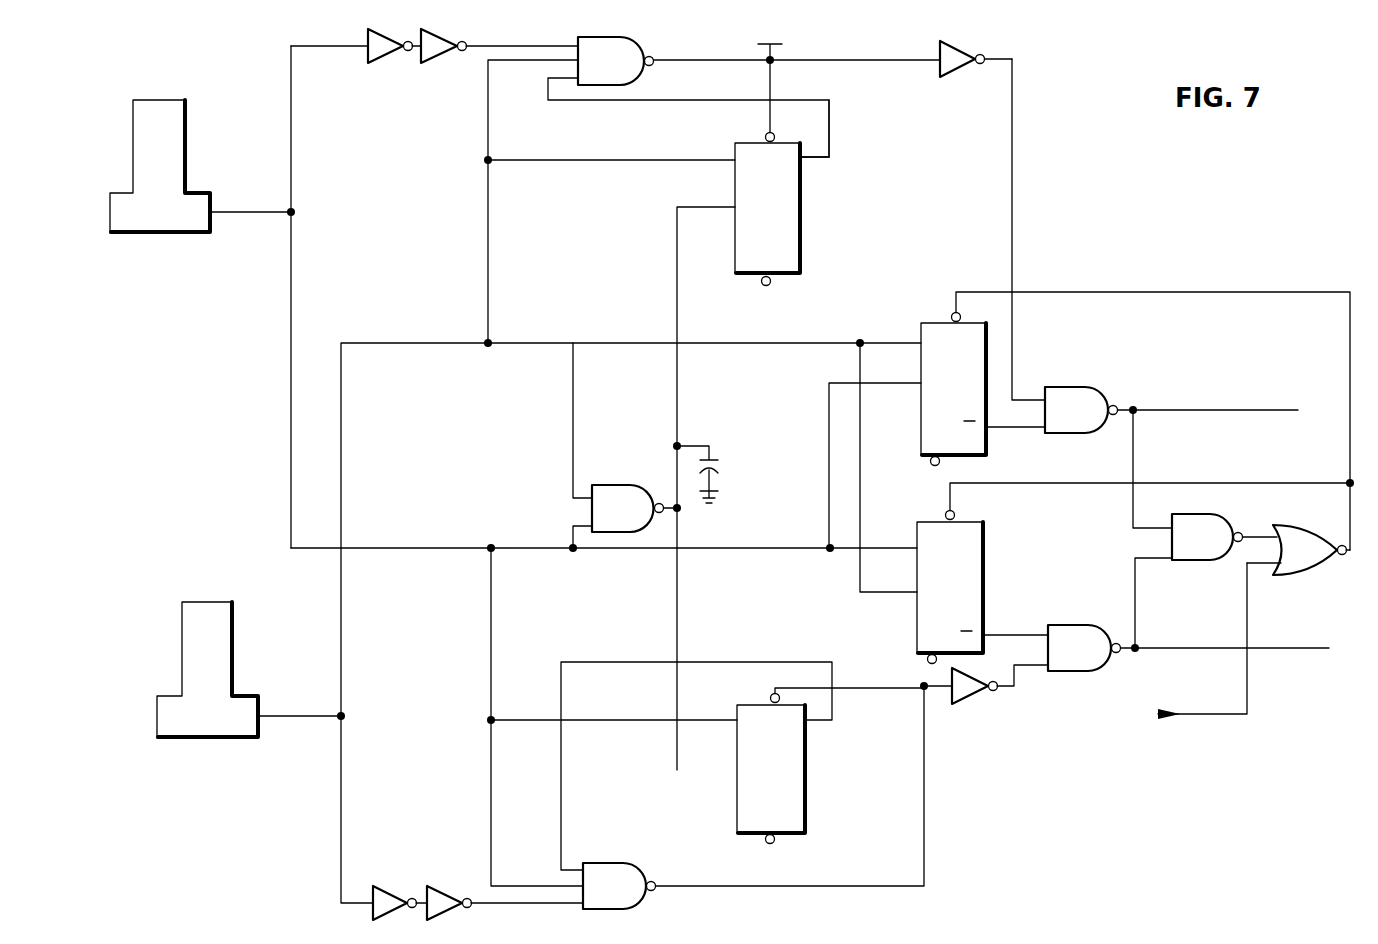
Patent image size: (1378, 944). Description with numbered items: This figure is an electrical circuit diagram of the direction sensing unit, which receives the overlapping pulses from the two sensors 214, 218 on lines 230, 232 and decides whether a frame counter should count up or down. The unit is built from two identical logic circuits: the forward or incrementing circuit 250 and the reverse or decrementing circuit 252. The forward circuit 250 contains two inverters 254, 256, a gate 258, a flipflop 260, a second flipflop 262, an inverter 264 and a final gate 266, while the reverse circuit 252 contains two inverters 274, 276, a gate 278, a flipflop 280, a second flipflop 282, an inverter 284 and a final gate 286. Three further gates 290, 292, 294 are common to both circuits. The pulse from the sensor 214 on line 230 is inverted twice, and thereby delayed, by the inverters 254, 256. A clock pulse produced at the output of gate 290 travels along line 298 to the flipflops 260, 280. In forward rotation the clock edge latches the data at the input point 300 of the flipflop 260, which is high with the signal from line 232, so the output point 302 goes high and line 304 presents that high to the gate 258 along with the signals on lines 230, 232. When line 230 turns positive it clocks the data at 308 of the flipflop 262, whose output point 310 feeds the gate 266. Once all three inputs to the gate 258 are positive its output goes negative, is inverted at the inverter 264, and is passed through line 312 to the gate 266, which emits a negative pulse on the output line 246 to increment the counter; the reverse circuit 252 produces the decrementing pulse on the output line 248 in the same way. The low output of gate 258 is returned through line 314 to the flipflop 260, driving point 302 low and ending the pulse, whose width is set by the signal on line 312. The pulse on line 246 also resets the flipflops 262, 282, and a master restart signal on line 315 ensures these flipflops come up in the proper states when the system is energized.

The sensor 214 is at (200, 166).
The sensor 218 is at (249, 670).
The line 230 is at (291, 496).
The line 232 is at (341, 437).
The output line 246 is at (1186, 410).
The output line 248 is at (1162, 647).
The forward or incrementing circuit 250 is at (284, 28).
The reverse or decrementing circuit 252 is at (322, 841).
The inverter 254 is at (380, 37).
The inverter 256 is at (446, 36).
The gate 258 is at (604, 45).
The flipflop 260 is at (786, 184).
The second flipflop 262 is at (938, 330).
The inverter 264 is at (954, 46).
The final gate 266 is at (1058, 398).
The inverter 274 is at (384, 881).
The inverter 276 is at (440, 889).
The gate 278 is at (595, 872).
The flipflop 280 is at (806, 786).
The second flipflop 282 is at (983, 578).
The inverter 284 is at (975, 690).
The final gate 286 is at (1065, 640).
The gate 290 is at (602, 495).
The gate 292 is at (1187, 530).
The gate 294 is at (1291, 540).
The line 298 is at (677, 294).
The input point 300 is at (735, 163).
The output point 302 is at (805, 168).
The line 304 is at (829, 108).
The data input 308 is at (918, 345).
The output point 310 is at (988, 433).
The line 312 is at (1012, 122).
The line 314 is at (774, 72).
The line 315 is at (1212, 714).